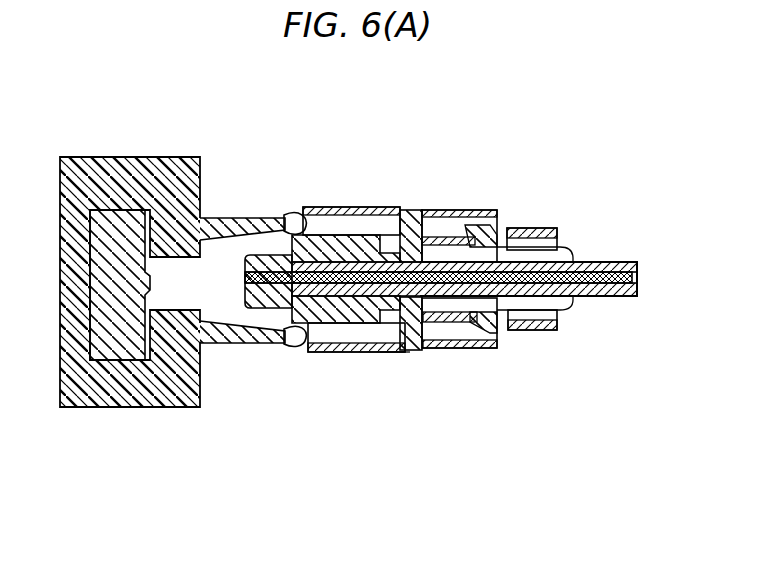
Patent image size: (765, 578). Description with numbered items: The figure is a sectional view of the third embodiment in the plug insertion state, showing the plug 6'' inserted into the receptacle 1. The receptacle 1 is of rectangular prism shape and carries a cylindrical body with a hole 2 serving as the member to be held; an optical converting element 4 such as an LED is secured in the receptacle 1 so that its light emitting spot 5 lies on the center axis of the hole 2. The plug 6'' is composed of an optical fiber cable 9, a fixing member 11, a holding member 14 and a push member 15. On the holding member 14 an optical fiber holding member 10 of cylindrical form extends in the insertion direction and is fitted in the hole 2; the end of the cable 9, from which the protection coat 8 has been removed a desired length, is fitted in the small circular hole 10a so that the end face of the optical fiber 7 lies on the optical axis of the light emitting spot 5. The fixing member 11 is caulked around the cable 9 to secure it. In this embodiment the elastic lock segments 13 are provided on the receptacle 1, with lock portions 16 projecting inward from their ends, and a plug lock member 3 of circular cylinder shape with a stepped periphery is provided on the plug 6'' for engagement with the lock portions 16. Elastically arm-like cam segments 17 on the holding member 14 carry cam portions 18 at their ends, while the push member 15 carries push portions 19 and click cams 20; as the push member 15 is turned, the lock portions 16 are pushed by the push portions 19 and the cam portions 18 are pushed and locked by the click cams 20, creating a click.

The receptacle 1 is at (64, 150).
The hole 2 is at (166, 262).
The plug lock member 3 is at (323, 206).
The optical converting element 4 is at (65, 300).
The light emitting spot 5 is at (150, 300).
The plug 6'' is at (388, 388).
The optical fiber 7 is at (637, 278).
The protection coat 8 is at (624, 268).
The optical fiber cable 9 is at (604, 256).
The optical fiber holding member 10 is at (242, 294).
The small circular hole 10a is at (245, 284).
The fixing member 11 is at (535, 226).
The elastic lock segments 13 is at (245, 219).
The holding member 14 is at (420, 330).
The push member 15 is at (424, 200).
The lock portions 16 is at (293, 345).
The cam segments 17 is at (445, 348).
The cam portions 18 is at (496, 347).
The push portions 19 is at (377, 206).
The click cams 20 is at (480, 210).